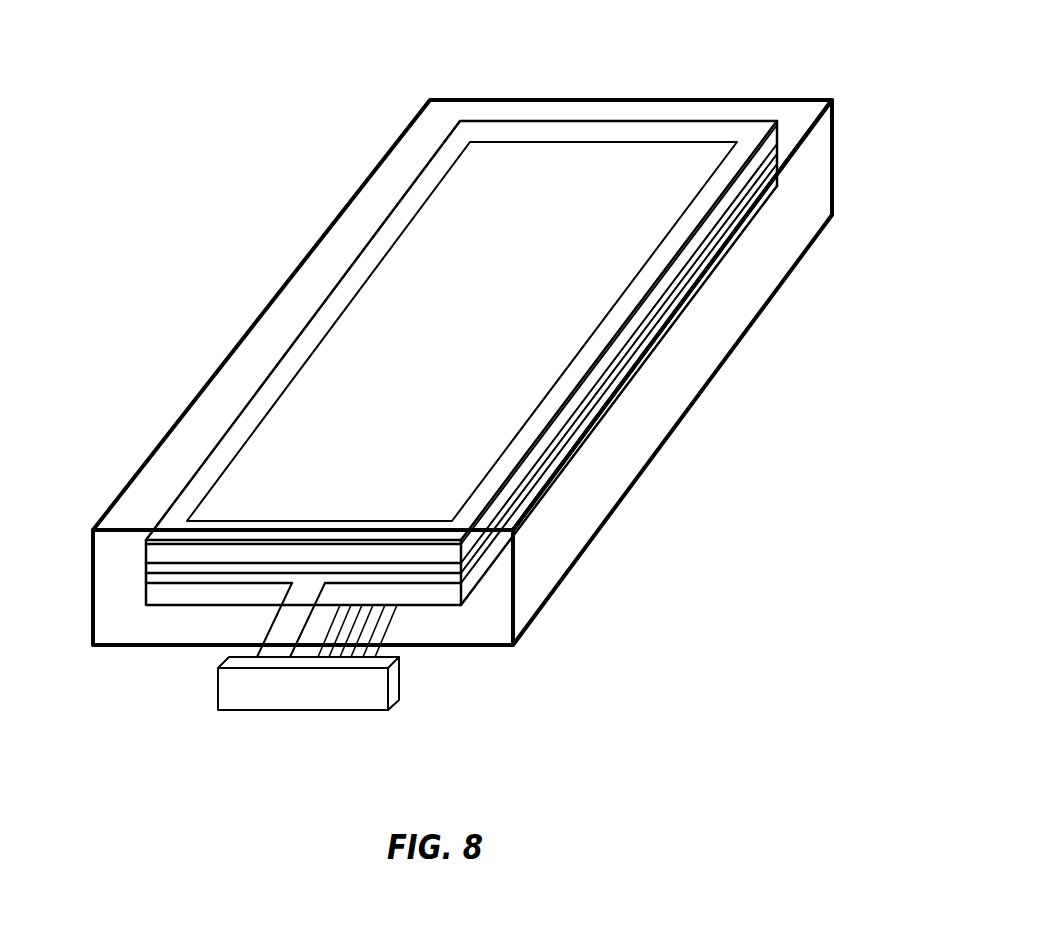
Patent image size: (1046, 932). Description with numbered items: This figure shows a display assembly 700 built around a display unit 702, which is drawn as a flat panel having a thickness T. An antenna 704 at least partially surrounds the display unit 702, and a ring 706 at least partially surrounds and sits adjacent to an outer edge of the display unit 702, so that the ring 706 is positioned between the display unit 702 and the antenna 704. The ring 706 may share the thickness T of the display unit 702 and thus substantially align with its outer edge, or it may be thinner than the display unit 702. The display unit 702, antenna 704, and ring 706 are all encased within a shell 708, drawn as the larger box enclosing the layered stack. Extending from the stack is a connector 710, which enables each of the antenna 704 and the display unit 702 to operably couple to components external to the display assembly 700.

The display assembly 700 is at (468, 378).
The display unit 702 is at (397, 291).
The antenna 704 is at (626, 358).
The ring 706 is at (260, 405).
The shell 708 is at (590, 500).
The connector 710 is at (322, 710).